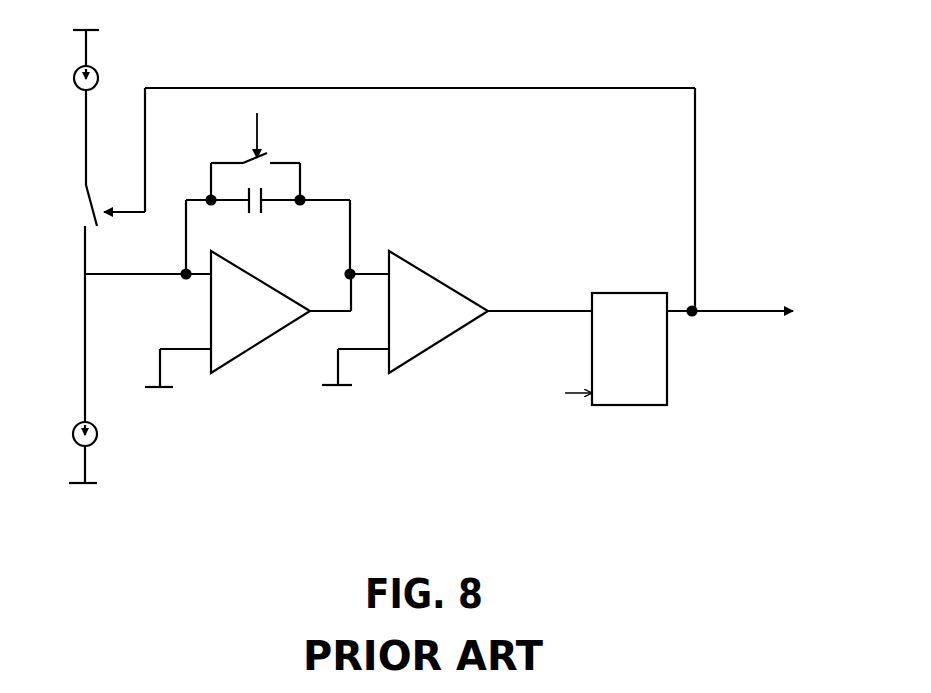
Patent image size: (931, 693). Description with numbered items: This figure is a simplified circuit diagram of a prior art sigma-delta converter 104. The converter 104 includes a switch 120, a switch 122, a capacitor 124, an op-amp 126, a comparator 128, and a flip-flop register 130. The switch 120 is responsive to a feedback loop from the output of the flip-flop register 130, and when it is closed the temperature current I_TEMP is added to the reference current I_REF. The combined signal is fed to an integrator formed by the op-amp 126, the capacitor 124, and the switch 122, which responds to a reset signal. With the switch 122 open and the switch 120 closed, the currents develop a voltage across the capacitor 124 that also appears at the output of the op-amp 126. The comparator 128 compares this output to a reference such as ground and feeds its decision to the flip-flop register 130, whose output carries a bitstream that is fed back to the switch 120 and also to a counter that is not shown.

The sigma-delta converter 104 is at (841, 37).
The switch 120 is at (79, 210).
The switch 122 is at (240, 153).
The capacitor 124 is at (253, 218).
The op-amp 126 is at (228, 365).
The comparator 128 is at (413, 362).
The flip-flop register 130 is at (640, 405).